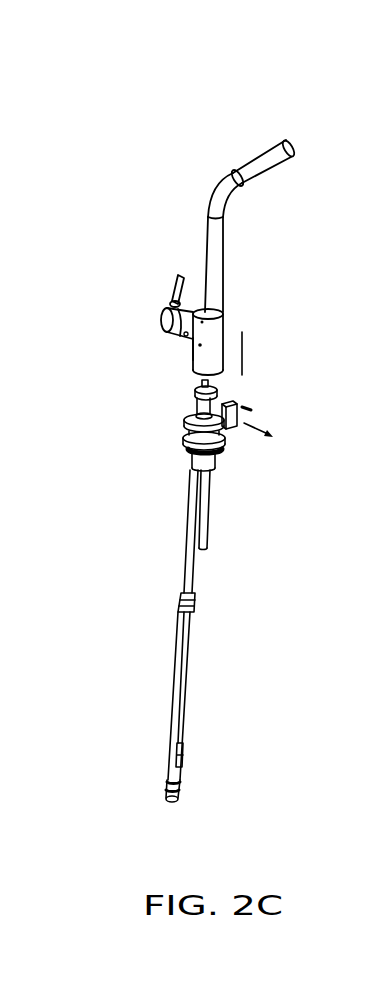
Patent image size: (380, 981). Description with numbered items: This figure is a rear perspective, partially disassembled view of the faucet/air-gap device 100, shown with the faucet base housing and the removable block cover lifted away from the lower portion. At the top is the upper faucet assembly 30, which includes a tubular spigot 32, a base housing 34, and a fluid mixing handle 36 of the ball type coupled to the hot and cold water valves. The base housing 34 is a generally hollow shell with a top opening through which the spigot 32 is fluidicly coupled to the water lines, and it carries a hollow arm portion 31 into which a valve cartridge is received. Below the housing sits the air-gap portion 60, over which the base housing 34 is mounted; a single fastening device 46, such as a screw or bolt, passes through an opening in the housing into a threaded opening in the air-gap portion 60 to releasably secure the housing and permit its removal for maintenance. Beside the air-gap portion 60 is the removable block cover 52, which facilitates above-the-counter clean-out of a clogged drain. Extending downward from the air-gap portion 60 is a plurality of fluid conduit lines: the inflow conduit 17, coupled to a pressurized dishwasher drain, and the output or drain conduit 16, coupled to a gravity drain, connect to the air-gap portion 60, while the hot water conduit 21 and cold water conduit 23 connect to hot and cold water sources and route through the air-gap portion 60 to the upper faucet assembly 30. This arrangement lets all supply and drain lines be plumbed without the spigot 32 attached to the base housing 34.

The faucet/air-gap device 100 is at (234, 430).
The tubular spigot 32 is at (272, 167).
The upper faucet assembly 30 is at (302, 284).
The base housing 34 is at (214, 334).
The fluid mixing handle 36 is at (163, 318).
The hollow arm portion 31 is at (186, 335).
The fastening device 46 is at (146, 374).
The air-gap portion 60 is at (276, 429).
The removable block cover 52 is at (265, 440).
The output or drain conduit 16 is at (235, 519).
The inflow conduit 17 is at (158, 625).
The cold water conduit 23 is at (183, 747).
The hot water conduit 21 is at (171, 758).